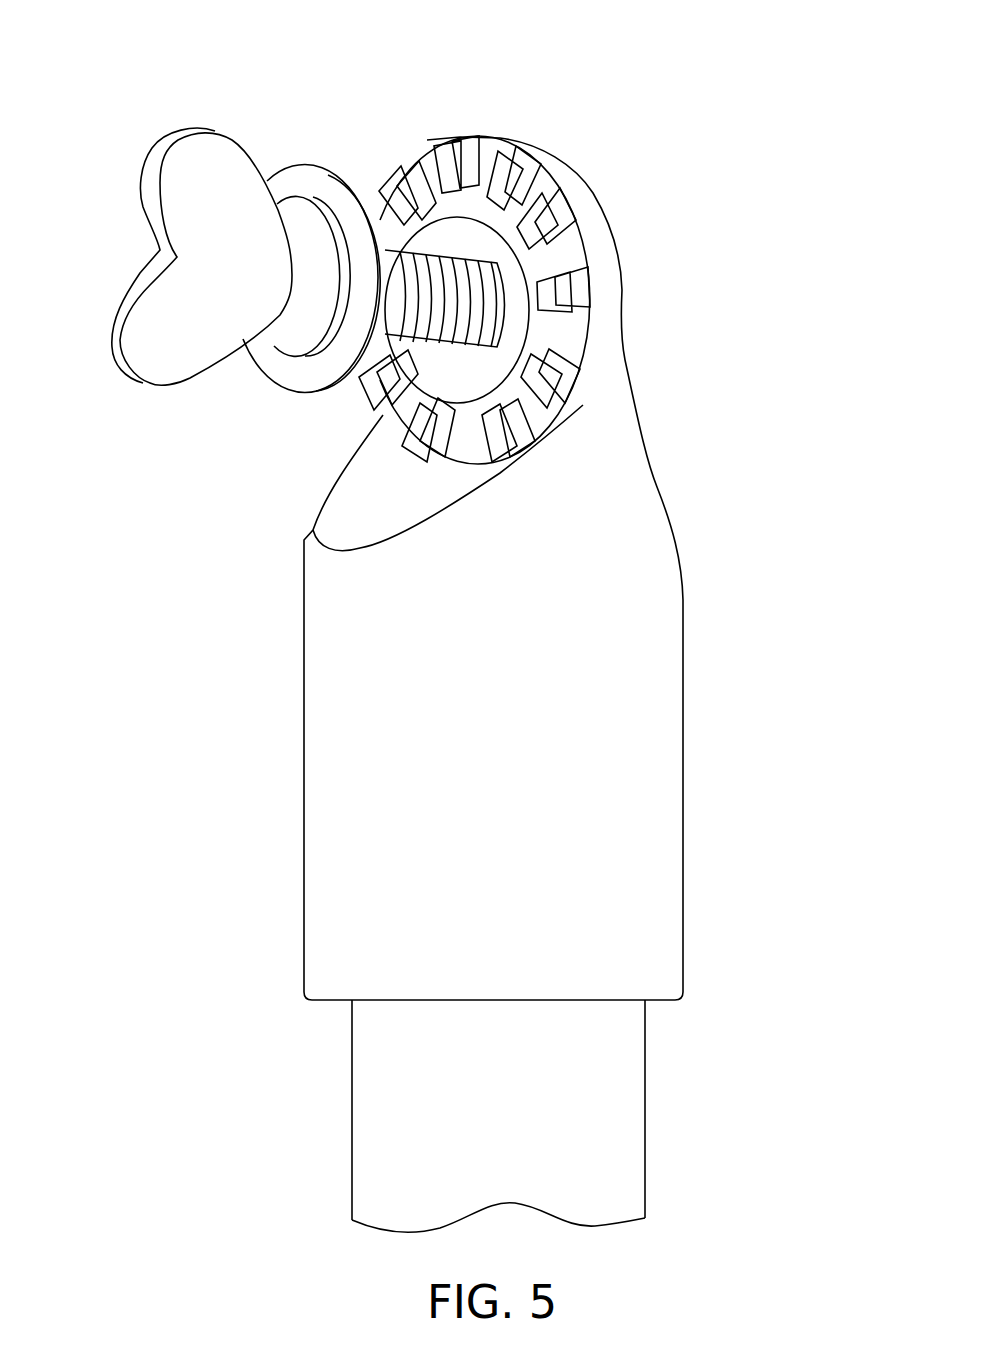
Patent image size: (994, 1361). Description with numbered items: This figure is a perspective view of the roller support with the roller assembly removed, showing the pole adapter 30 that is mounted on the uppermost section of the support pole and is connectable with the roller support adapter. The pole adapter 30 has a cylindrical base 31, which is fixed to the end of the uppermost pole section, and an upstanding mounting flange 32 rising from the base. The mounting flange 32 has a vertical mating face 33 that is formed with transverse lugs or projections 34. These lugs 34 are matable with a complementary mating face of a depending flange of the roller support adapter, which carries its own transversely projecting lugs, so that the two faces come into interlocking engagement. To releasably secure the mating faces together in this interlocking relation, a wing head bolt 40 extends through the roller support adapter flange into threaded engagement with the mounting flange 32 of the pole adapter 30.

The pole adapter 30 is at (412, 712).
The cylindrical base 31 is at (430, 933).
The upstanding mounting flange 32 is at (602, 237).
The vertical mating face 33 is at (518, 187).
The transverse lugs or projections 34 is at (547, 373).
The wing head bolt 40 is at (197, 180).